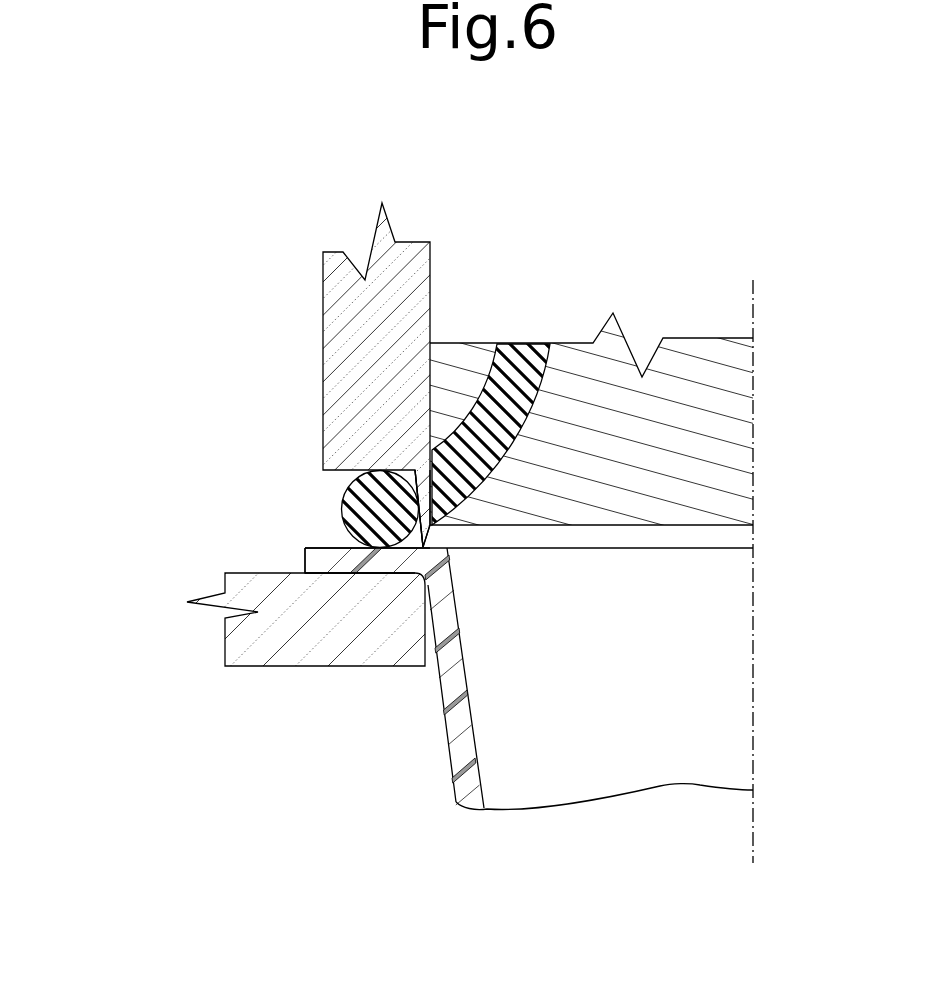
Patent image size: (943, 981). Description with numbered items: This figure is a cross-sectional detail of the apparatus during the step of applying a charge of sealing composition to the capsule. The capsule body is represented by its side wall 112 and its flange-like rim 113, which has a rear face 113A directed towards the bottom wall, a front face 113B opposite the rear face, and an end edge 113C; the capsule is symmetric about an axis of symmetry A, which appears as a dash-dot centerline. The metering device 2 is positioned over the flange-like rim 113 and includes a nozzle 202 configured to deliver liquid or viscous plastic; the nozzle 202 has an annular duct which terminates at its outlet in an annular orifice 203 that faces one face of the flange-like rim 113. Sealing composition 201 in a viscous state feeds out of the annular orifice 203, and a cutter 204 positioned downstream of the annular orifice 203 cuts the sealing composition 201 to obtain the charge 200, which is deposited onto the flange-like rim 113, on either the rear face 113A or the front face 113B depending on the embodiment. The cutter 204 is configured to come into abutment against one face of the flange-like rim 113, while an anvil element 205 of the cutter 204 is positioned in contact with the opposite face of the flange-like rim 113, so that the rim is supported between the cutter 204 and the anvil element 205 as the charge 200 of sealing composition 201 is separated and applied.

The metering device 2 is at (348, 228).
The annular orifice 203 is at (432, 452).
The nozzle 202 is at (673, 400).
The sealing composition 201 is at (512, 357).
The axis of symmetry A is at (752, 305).
The charge 200 is at (345, 500).
The cutter 204 is at (424, 477).
The flange-like rim 113 is at (325, 560).
The front face 113B is at (330, 550).
The end edge 113C is at (303, 564).
The rear face 113A is at (310, 577).
The anvil element 205 is at (372, 627).
The side wall 112 is at (460, 758).